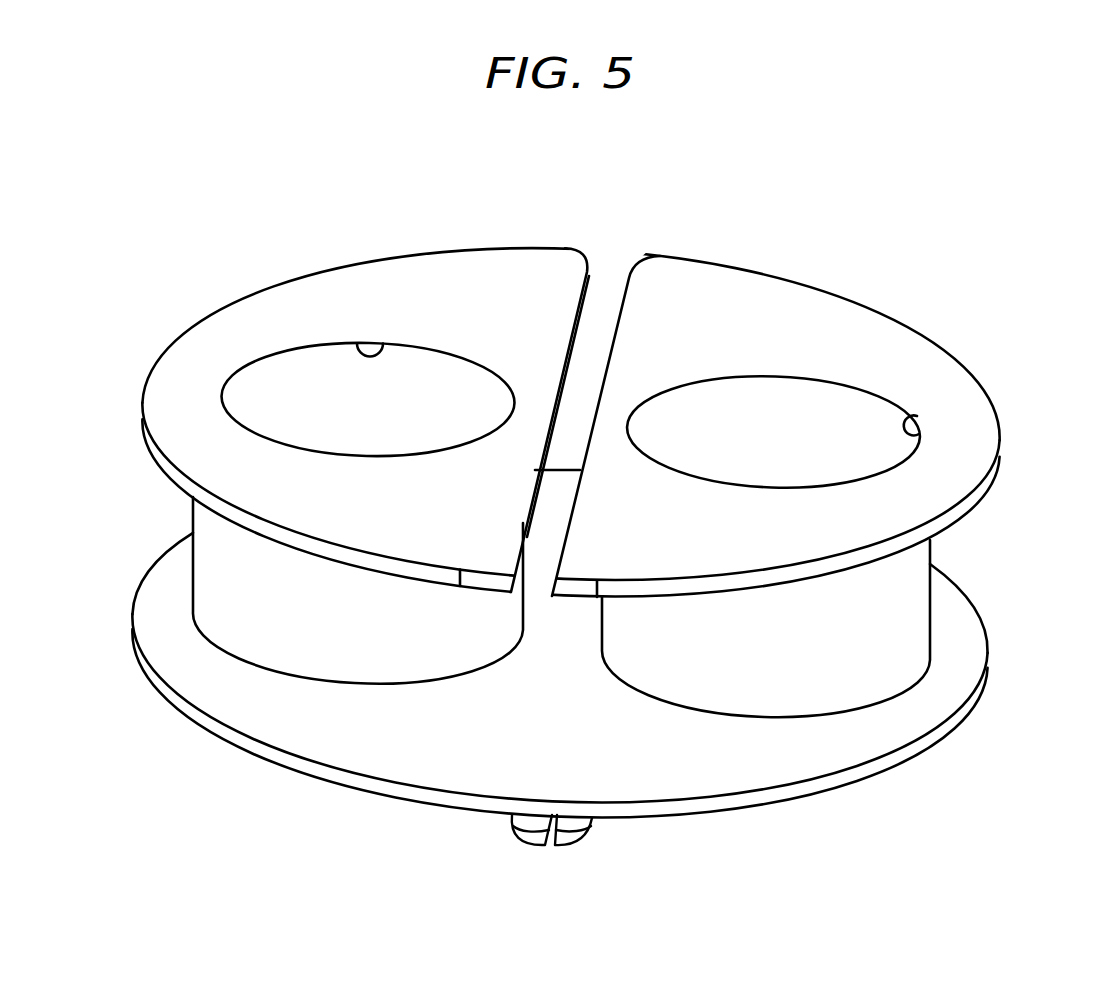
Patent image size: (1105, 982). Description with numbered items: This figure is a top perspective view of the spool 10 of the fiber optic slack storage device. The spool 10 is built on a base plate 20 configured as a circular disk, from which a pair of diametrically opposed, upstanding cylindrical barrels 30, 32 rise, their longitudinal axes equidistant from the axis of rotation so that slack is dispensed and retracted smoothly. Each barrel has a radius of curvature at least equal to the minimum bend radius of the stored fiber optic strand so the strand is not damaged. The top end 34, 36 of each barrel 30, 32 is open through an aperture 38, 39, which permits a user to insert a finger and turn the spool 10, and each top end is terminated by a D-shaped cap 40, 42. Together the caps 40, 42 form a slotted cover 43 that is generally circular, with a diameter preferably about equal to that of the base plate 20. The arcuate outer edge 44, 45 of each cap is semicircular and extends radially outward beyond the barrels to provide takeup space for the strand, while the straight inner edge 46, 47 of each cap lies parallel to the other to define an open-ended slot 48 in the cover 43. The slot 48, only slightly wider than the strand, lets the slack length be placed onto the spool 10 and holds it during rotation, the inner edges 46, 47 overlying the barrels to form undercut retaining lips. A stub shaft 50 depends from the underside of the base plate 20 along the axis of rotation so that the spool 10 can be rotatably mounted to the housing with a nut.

The spool 10 is at (858, 792).
The base plate 20 is at (957, 668).
The cylindrical barrel 30 is at (903, 611).
The cylindrical barrel 32 is at (222, 528).
The top end 34 is at (917, 430).
The top end 36 is at (384, 346).
The aperture 38 is at (763, 410).
The aperture 39 is at (285, 383).
The D-shaped cap 40 is at (935, 528).
The D-shaped cap 42 is at (158, 453).
The slotted cover 43 is at (547, 280).
The arcuate outer edge 44 is at (1002, 441).
The arcuate outer edge 45 is at (153, 363).
The inner edge 46 is at (633, 272).
The inner edge 47 is at (588, 272).
The slot 48 is at (607, 357).
The stub shaft 50 is at (582, 841).